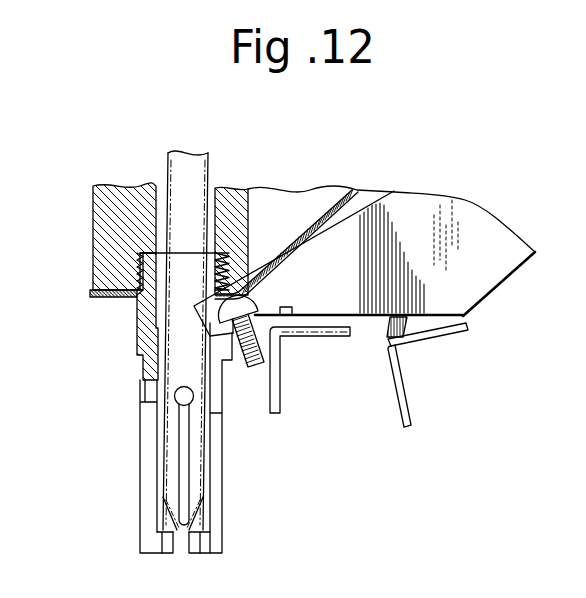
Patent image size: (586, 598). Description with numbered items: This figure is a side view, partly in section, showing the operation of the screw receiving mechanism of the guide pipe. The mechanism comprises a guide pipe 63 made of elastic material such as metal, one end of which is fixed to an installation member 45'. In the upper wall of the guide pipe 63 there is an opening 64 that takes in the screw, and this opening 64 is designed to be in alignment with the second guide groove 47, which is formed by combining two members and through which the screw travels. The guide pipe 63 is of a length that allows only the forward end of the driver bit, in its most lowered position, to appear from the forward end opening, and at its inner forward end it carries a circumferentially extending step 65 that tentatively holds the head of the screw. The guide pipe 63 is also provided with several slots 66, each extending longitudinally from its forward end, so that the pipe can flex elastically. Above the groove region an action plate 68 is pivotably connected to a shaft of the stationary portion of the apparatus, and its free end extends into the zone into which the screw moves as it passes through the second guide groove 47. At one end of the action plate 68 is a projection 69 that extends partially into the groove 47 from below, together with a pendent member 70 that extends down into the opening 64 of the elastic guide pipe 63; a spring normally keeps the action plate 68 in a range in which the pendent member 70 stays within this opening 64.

The installation member 45' is at (89, 240).
The opening 64 is at (142, 347).
The guide pipe 63 is at (140, 360).
The slots 66 is at (182, 449).
The circumferentially extending step 65 is at (193, 528).
The second guide groove 47 is at (295, 268).
The action plate 68 is at (438, 332).
The projection 69 is at (403, 320).
The pendent member 70 is at (411, 421).